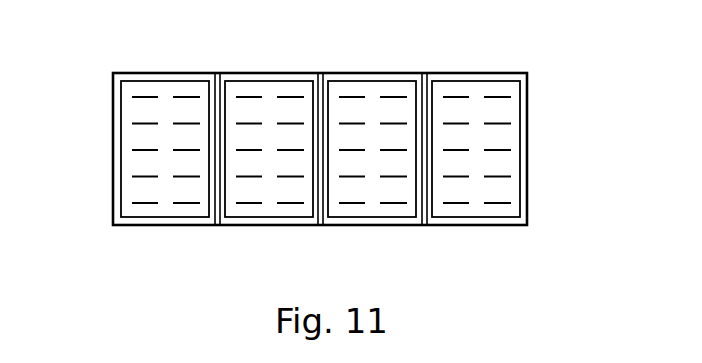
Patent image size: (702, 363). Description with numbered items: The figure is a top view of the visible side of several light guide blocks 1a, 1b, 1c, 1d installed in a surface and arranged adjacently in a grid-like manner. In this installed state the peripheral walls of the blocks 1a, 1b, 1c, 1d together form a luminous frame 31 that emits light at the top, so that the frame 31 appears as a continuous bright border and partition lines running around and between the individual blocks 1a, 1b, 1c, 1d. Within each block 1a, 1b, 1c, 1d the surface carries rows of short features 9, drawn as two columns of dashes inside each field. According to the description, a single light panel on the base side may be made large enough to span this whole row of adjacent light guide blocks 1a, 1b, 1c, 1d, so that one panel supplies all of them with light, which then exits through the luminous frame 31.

The luminous frame 31 is at (113, 97).
The cell 9 is at (448, 120).
The first panel 1a is at (170, 225).
The second panel 1b is at (275, 225).
The third panel 1c is at (382, 225).
The fourth panel 1d is at (487, 225).